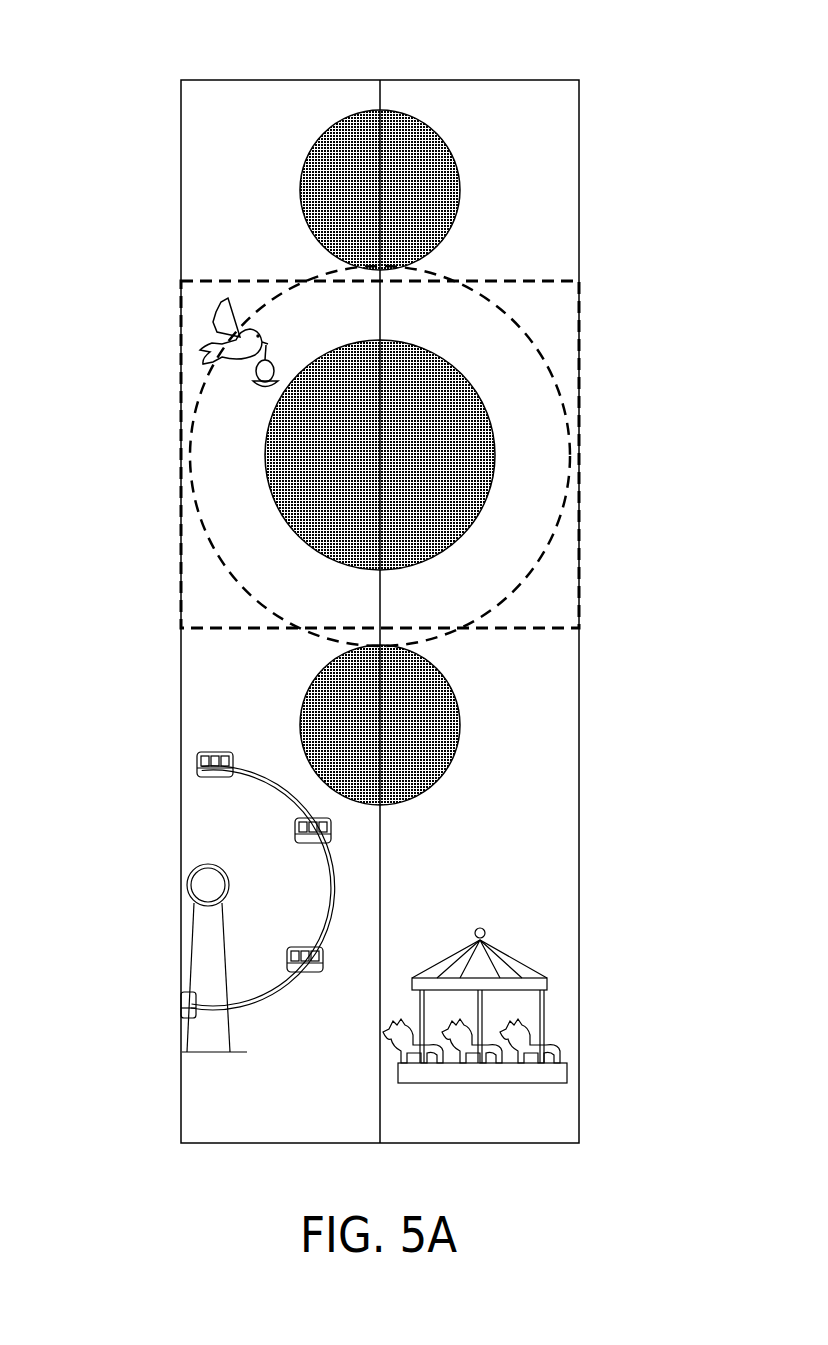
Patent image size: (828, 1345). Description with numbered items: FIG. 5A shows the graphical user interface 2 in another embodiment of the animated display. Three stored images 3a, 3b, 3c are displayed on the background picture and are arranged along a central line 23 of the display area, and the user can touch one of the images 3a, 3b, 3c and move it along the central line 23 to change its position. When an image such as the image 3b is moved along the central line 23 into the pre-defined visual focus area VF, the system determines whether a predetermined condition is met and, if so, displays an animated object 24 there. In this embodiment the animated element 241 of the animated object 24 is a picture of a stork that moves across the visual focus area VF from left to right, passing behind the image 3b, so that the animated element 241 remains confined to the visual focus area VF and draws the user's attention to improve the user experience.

The graphical user interface 2 is at (81, 31).
The central line 23 is at (380, 95).
The image 3a is at (305, 157).
The image 3b is at (272, 427).
The image 3c is at (308, 683).
The animated object 24 is at (217, 550).
The animated element 241 is at (213, 333).
The visual focus area VF is at (518, 627).